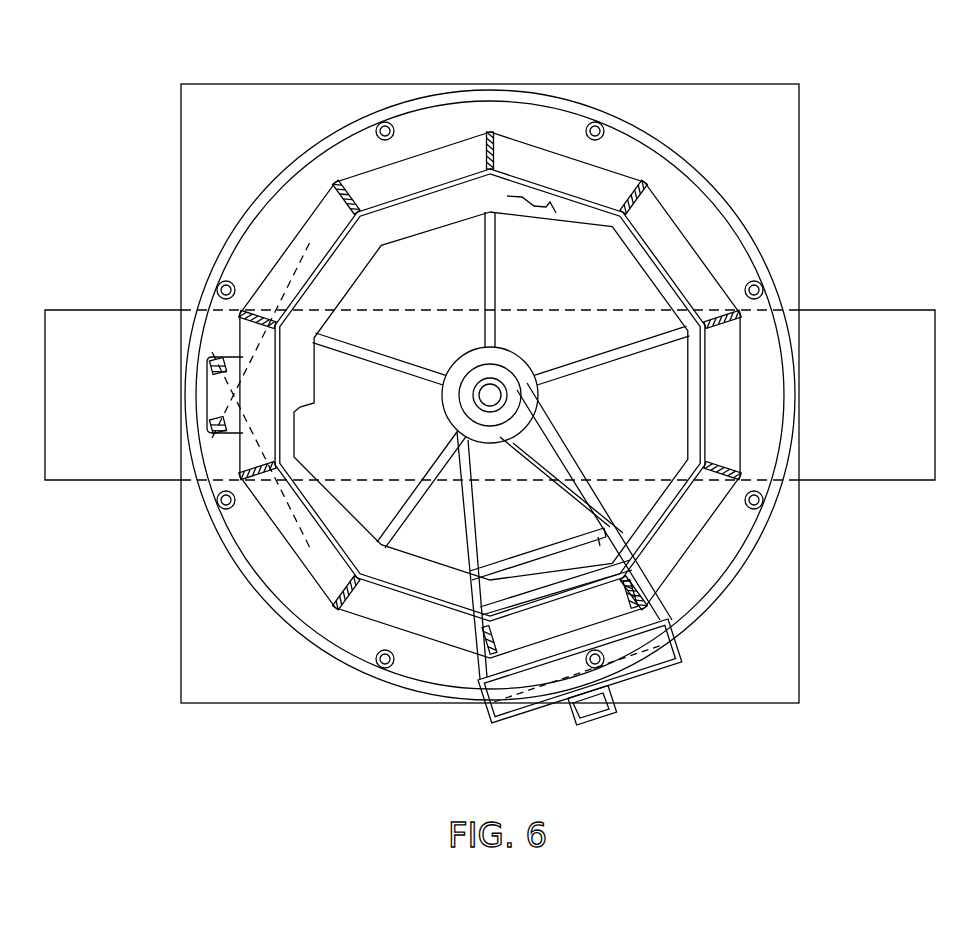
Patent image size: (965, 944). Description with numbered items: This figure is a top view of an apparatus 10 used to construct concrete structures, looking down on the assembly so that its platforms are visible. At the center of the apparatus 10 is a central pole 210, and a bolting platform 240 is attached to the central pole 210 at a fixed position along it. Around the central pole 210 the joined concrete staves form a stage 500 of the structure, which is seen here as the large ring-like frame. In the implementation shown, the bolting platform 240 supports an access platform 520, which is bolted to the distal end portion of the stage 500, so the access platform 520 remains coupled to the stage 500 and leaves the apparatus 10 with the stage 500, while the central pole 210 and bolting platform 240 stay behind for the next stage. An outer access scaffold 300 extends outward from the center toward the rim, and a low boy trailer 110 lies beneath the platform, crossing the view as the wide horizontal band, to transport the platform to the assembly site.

The apparatus 10 is at (847, 117).
The low boy trailer 110 is at (846, 326).
The stage 500 is at (463, 171).
The access platform 520 is at (507, 198).
The bolting platform 240 is at (645, 262).
The central pole 210 is at (486, 394).
The outer access scaffold 300 is at (684, 645).